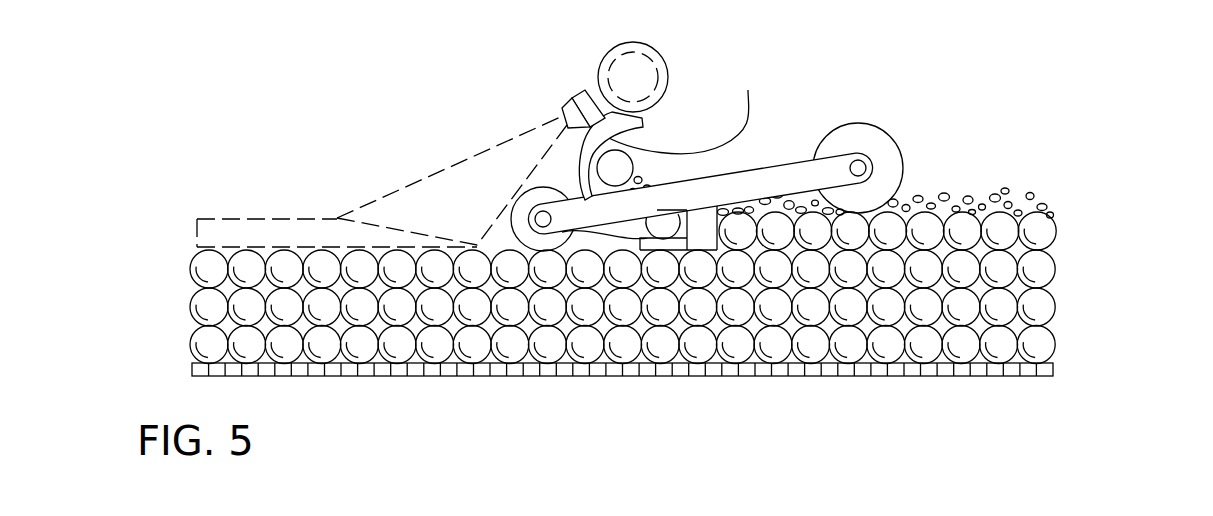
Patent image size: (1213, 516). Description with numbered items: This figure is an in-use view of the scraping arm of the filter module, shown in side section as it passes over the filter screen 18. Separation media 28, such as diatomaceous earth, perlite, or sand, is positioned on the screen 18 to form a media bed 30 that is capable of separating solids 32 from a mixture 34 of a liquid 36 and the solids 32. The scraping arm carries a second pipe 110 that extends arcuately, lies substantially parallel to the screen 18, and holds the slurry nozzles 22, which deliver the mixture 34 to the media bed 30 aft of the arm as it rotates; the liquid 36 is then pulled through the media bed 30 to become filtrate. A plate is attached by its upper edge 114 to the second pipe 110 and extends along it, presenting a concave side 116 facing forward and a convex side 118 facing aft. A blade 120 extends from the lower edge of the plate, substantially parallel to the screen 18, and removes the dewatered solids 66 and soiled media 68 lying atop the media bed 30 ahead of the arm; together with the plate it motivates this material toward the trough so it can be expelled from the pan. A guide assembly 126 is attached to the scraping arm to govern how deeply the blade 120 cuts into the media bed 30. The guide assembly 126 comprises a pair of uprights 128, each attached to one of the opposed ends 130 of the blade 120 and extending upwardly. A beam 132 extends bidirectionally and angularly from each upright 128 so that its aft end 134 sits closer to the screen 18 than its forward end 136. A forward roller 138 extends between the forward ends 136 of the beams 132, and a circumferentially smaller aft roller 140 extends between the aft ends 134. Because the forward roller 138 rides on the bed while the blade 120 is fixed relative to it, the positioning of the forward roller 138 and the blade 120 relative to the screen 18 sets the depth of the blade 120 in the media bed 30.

The screen 18 is at (1053, 370).
The slurry nozzles 22 is at (578, 95).
The separation media 28 is at (1040, 347).
The media bed 30 is at (652, 294).
The solids 32 is at (212, 228).
The mixture 34 is at (247, 232).
The liquid 36 is at (270, 233).
The dewatered solids 66 is at (1030, 195).
The soiled media 68 is at (1040, 235).
The second pipe 110 is at (633, 55).
The upper edge 114 is at (643, 117).
The concave side 116 is at (702, 200).
The convex side 118 is at (543, 165).
The blade 120 is at (690, 240).
The guide assembly 126 is at (717, 228).
The uprights 128 is at (708, 207).
The opposed ends 130 is at (740, 232).
The beams 132 is at (703, 197).
The aft end 134 is at (530, 220).
The forward end 136 is at (897, 147).
The forward roller 138 is at (887, 175).
The aft roller 140 is at (534, 242).